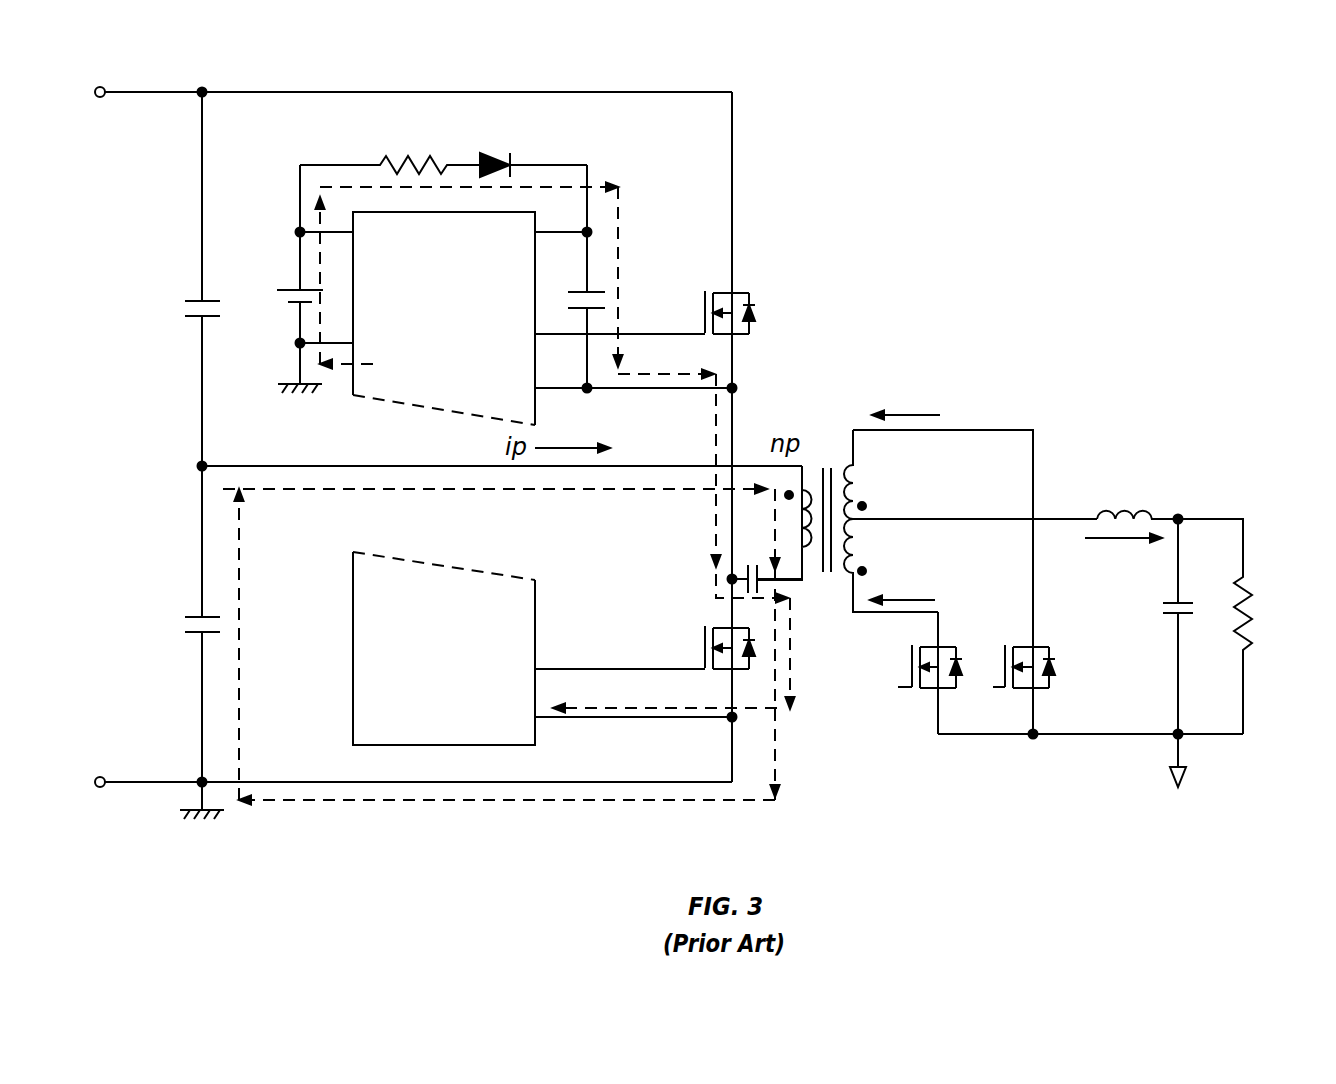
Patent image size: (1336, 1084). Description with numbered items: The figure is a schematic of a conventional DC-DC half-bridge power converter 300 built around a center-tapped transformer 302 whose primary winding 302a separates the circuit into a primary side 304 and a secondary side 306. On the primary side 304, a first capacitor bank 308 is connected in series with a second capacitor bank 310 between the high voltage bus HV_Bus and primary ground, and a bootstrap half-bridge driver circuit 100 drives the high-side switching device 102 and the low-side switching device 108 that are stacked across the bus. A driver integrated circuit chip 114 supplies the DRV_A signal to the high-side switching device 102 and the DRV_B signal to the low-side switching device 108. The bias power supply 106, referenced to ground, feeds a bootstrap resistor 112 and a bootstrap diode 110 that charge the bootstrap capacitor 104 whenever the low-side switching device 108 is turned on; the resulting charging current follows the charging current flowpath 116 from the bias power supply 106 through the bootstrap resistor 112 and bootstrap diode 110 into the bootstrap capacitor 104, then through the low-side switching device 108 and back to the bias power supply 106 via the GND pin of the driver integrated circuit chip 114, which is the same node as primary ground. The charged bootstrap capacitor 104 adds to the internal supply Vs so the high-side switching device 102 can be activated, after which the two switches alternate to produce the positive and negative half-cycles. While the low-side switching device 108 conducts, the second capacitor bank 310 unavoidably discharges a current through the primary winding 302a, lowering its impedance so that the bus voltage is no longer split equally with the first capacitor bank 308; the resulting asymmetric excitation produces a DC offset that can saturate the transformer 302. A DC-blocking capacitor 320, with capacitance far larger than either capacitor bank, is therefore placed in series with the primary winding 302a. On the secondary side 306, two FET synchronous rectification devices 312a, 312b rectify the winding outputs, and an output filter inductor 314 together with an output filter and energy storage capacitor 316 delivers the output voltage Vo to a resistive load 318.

The bootstrap half-bridge driver circuit 100 is at (634, 138).
The high-side switching device 102 is at (738, 296).
The bootstrap capacitor 104 is at (606, 293).
The bias power supply 106 is at (292, 290).
The low-side switching device 108 is at (700, 640).
The bootstrap diode 110 is at (490, 158).
The bootstrap resistor 112 is at (385, 160).
The driver integrated circuit chip 114 is at (462, 290).
The charging current flowpath 116 is at (632, 206).
The half-bridge power converter 300 is at (853, 122).
The transformer 302 is at (837, 640).
The primary winding 302a is at (805, 465).
The primary side 304 is at (363, 830).
The secondary side 306 is at (1082, 810).
The first capacitor bank 308 is at (190, 301).
The second capacitor bank 310 is at (190, 617).
The synchronous rectification device 312a is at (948, 645).
The synchronous rectification device 312b is at (1043, 645).
The output filter inductor 314 is at (1125, 505).
The output filter and energy storage capacitor 316 is at (1188, 598).
The resistive load 318 is at (1250, 582).
The DC-blocking capacitor 320 is at (748, 568).